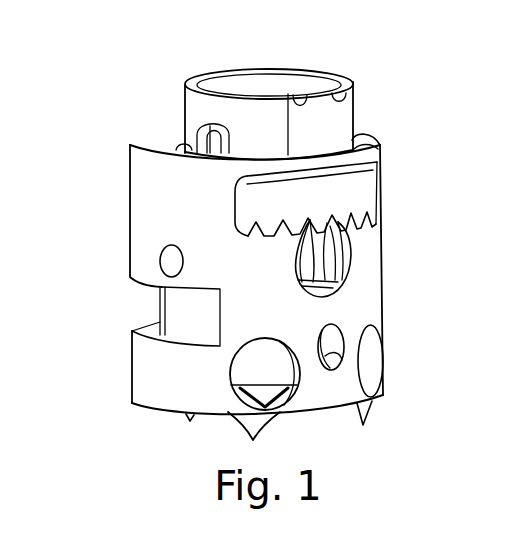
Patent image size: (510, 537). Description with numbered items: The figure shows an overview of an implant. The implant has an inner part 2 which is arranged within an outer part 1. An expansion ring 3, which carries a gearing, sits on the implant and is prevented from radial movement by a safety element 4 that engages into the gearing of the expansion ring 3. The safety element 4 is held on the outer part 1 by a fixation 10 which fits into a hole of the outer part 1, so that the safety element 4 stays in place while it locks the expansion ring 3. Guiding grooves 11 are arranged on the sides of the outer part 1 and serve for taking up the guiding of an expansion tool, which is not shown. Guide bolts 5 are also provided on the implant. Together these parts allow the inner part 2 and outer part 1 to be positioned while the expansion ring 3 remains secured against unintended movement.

The outer part 1 is at (168, 385).
The inner part 2 is at (247, 115).
The expansion ring 3 is at (363, 200).
The safety element 4 is at (323, 261).
The guide bolts 5 is at (172, 262).
The fixation safety element 10 is at (330, 337).
The guiding groove 11 is at (190, 311).